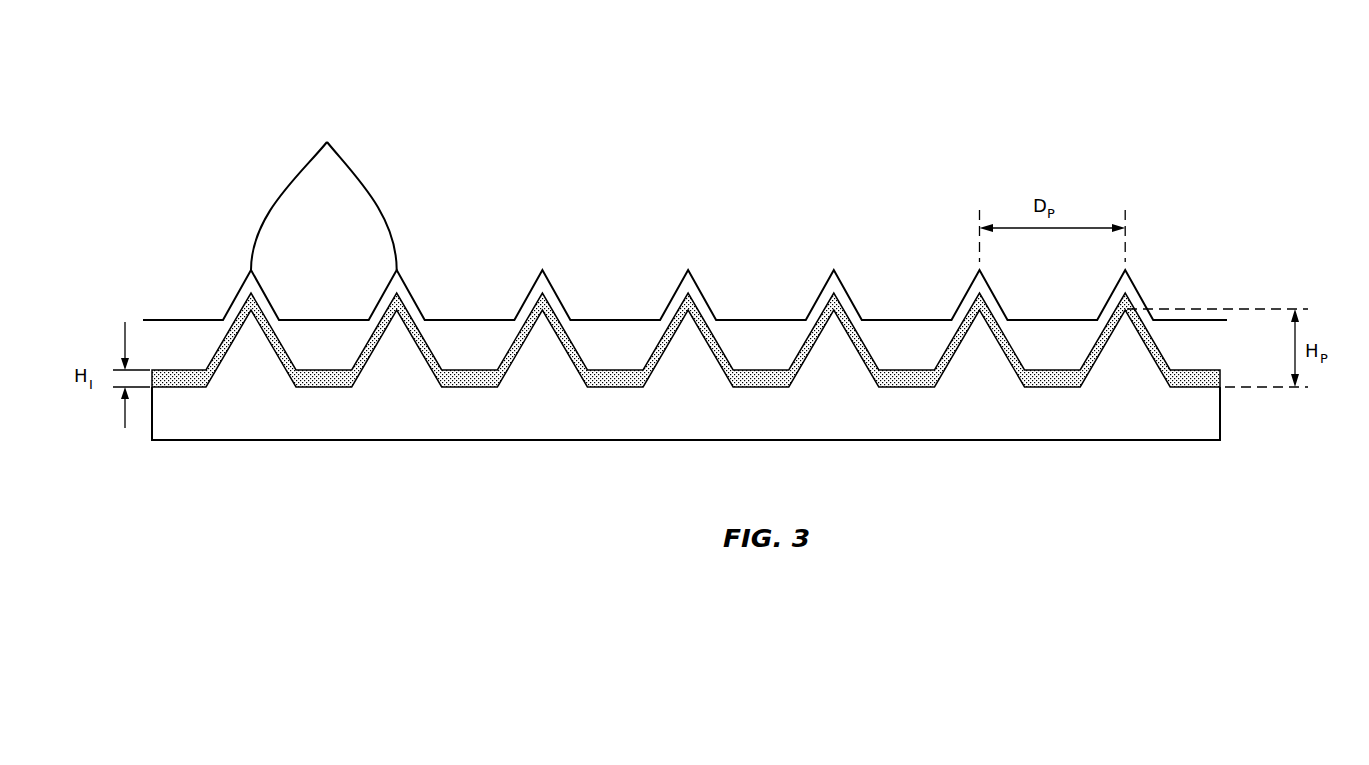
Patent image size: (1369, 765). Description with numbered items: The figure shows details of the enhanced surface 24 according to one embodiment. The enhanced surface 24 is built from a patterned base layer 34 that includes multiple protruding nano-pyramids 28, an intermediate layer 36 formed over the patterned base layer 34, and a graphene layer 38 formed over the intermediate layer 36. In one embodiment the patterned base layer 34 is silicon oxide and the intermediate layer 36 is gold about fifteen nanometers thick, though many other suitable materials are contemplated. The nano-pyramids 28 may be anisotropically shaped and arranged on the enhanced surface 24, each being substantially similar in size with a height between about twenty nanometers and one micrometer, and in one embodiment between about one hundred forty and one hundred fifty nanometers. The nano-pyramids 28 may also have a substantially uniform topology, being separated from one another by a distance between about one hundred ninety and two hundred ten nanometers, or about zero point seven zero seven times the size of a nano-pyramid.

The enhanced surface 24 is at (923, 122).
The nano-pyramids 28 is at (324, 193).
The patterned base layer 34 is at (1207, 427).
The intermediate layer 36 is at (340, 380).
The graphene layer 38 is at (448, 320).